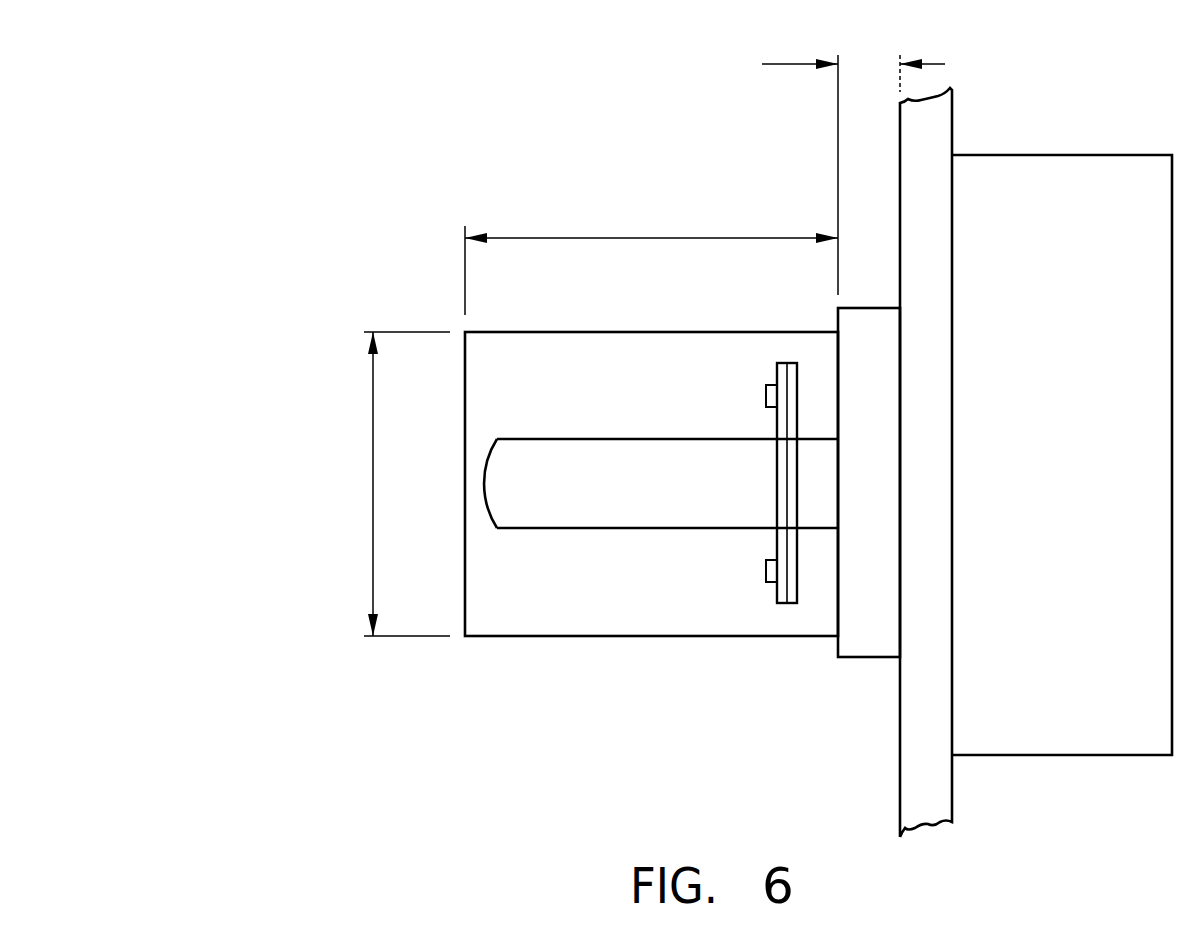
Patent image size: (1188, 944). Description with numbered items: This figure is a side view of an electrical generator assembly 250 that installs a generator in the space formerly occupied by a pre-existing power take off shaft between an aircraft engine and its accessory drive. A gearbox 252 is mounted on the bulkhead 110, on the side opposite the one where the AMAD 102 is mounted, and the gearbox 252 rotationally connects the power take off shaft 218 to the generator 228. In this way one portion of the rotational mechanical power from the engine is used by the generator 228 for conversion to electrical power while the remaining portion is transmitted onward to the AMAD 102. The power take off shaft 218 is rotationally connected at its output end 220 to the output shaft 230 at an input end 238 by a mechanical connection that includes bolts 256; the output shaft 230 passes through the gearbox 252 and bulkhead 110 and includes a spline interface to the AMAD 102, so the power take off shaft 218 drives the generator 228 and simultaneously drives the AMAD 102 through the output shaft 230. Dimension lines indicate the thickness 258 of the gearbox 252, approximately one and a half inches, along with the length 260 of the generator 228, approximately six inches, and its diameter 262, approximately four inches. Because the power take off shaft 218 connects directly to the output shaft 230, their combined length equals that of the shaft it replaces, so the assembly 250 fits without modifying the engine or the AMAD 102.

The electrical generator assembly 250 is at (296, 100).
The generator 228 is at (686, 318).
The power take off shaft 218 is at (653, 495).
The output end 220 is at (777, 545).
The bolts 256 is at (766, 396).
The input end 238 is at (798, 557).
The gearbox 252 is at (894, 501).
The output shaft 230 is at (820, 472).
The bulkhead 110 is at (940, 787).
The AMAD 102 is at (1088, 530).
The length 260 is at (660, 238).
The thickness 258 is at (782, 66).
The diameter 262 is at (373, 472).